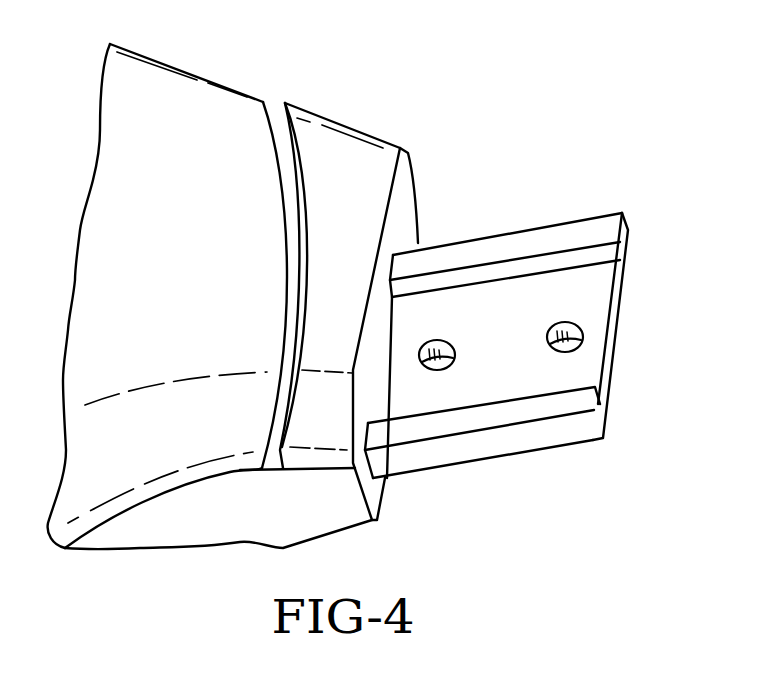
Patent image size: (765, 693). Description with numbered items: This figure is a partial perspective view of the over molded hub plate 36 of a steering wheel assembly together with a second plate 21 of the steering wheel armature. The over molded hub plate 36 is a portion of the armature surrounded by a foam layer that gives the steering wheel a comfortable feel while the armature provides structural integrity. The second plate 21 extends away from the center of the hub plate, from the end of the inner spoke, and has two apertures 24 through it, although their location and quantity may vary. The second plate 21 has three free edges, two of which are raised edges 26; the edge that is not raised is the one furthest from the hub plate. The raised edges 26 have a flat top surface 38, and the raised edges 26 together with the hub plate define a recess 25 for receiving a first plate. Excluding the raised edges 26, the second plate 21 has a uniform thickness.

The over molded hub plate 36 is at (362, 157).
The flat top surface 38 is at (503, 247).
The second plate 21 is at (521, 321).
The apertures 24 is at (572, 332).
The recess 25 is at (558, 377).
The raised edges 26 is at (540, 438).